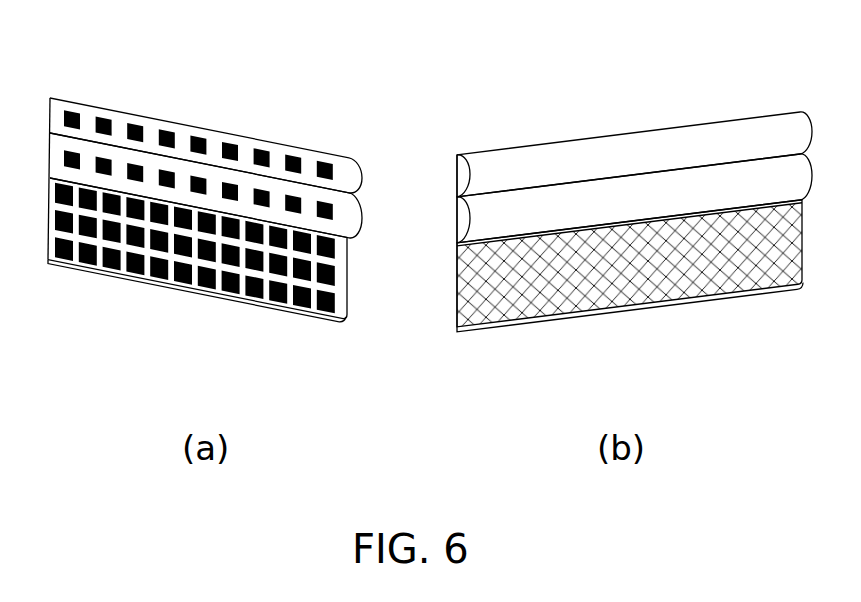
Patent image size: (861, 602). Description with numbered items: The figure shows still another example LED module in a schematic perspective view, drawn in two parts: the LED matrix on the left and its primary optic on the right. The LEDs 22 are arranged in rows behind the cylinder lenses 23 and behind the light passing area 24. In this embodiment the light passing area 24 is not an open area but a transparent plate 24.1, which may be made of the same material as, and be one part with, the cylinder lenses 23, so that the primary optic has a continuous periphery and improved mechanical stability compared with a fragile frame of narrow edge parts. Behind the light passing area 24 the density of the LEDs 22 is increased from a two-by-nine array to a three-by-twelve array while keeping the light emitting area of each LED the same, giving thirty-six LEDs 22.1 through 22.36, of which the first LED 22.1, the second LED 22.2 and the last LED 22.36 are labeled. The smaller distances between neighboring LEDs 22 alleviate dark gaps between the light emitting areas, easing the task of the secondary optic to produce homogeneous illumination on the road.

The LEDs 22 is at (100, 112).
The first LED 22.1 is at (53, 178).
The second LED 22.2 is at (78, 187).
The thirty-sixth LED 22.36 is at (325, 312).
The cylinder lenses 23 is at (355, 217).
The light passing area 24 is at (212, 290).
The transparent plate 24.1 is at (97, 275).